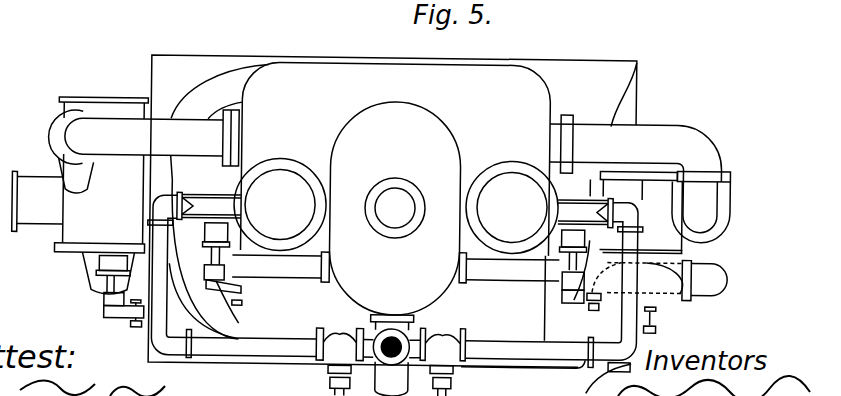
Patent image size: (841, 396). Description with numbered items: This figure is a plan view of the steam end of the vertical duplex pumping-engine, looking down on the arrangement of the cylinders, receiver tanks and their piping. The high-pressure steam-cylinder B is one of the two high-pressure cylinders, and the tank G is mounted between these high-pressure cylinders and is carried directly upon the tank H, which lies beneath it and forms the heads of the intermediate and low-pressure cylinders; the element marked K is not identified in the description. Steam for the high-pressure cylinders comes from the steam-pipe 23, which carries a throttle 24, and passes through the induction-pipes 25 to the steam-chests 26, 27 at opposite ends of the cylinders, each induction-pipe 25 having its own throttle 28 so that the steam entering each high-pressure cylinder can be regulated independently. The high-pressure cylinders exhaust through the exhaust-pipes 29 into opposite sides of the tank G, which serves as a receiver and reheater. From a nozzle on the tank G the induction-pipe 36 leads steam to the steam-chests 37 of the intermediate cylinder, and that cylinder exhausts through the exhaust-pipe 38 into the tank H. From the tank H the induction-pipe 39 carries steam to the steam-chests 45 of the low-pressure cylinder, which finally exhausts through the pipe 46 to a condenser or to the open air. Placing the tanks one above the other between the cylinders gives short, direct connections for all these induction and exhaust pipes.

The tank H is at (402, 200).
The tank G is at (395, 208).
The high-pressure steam-cylinder B is at (279, 204).
The right cylinder K is at (511, 207).
The steam-pipe 23 is at (383, 340).
The throttle 24 is at (405, 342).
The induction-pipes 25 is at (164, 321).
The steam-chest 26 is at (585, 254).
The steam-chest 27 is at (209, 248).
The throttle 28 is at (391, 361).
The exhaust-pipes 29 is at (395, 267).
The induction-pipe 36 is at (727, 264).
The steam-chests 37 is at (636, 216).
The exhaust-pipe 38 is at (640, 179).
The induction-pipe 39 is at (143, 151).
The steam-chests 45 is at (101, 212).
The pipe 46 is at (38, 201).